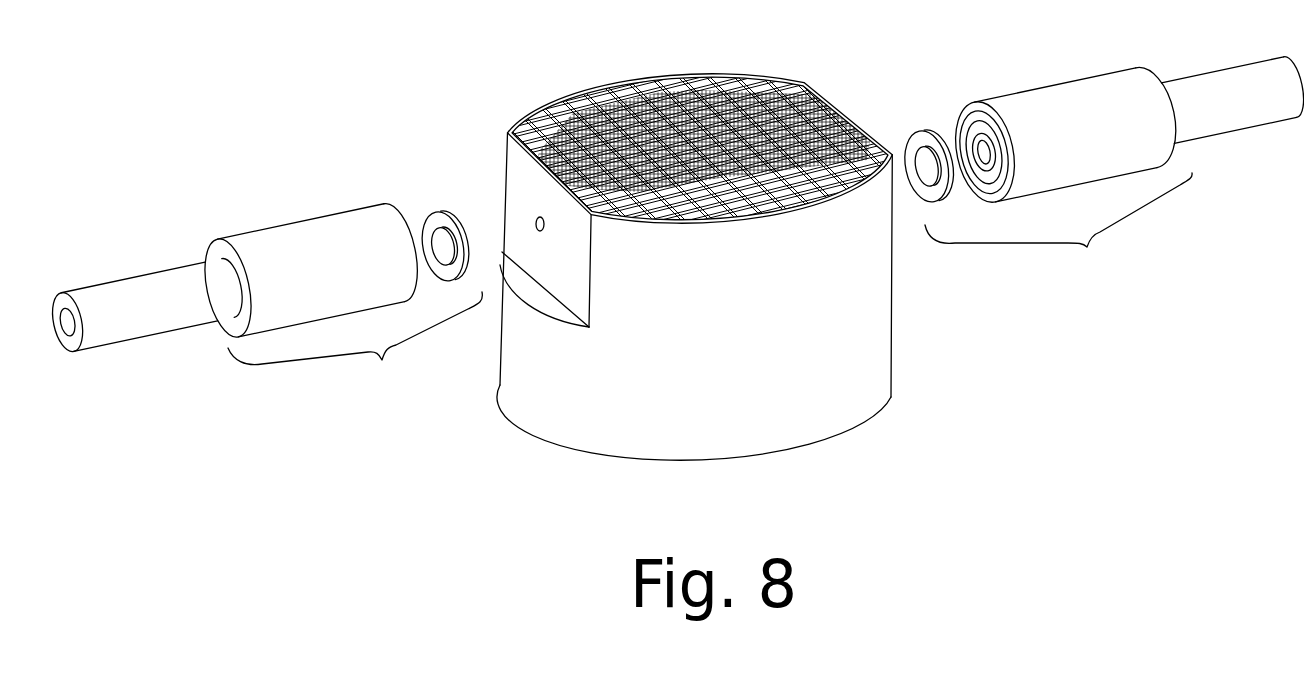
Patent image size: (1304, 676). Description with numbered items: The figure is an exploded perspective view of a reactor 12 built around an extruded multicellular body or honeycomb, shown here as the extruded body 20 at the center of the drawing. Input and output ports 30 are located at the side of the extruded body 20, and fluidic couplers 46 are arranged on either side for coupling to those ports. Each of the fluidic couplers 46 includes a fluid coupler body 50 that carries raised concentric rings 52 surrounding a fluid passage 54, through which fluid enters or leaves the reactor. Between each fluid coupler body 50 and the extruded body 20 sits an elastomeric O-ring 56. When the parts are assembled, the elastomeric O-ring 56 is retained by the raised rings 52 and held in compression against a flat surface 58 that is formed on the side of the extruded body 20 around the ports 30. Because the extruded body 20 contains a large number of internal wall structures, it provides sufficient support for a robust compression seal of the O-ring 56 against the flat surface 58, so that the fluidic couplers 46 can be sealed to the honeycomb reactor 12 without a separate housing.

The reactor 12 is at (869, 472).
The extruded body 20 is at (858, 340).
The input and output ports 30 is at (536, 229).
The fluidic couplers 46 is at (710, 283).
The fluid coupler body 50 is at (673, 204).
The raised concentric rings 52 is at (970, 137).
The fluid passage 54 is at (975, 157).
The elastomeric O-ring 56 is at (433, 220).
The flat surface 58 is at (518, 168).